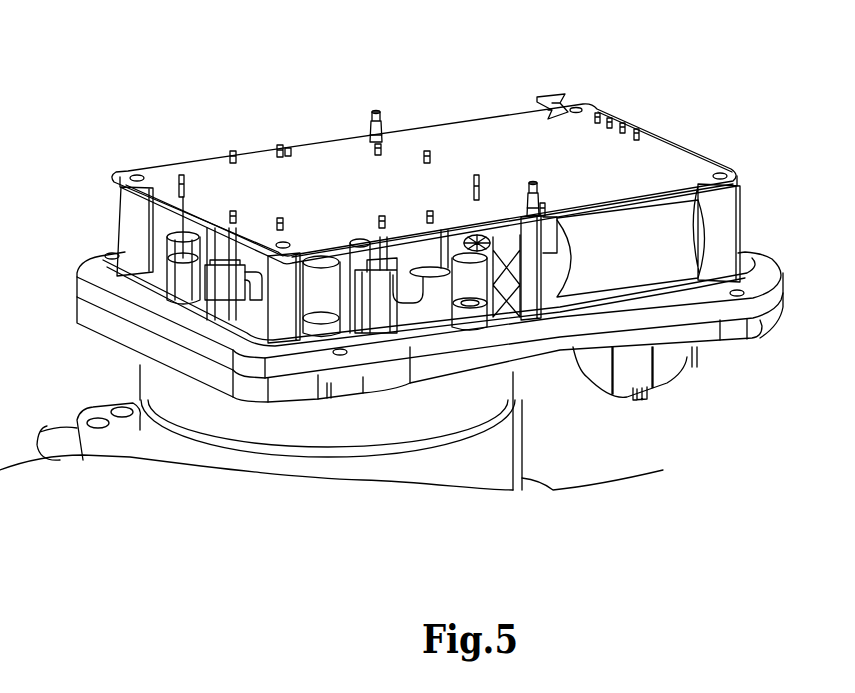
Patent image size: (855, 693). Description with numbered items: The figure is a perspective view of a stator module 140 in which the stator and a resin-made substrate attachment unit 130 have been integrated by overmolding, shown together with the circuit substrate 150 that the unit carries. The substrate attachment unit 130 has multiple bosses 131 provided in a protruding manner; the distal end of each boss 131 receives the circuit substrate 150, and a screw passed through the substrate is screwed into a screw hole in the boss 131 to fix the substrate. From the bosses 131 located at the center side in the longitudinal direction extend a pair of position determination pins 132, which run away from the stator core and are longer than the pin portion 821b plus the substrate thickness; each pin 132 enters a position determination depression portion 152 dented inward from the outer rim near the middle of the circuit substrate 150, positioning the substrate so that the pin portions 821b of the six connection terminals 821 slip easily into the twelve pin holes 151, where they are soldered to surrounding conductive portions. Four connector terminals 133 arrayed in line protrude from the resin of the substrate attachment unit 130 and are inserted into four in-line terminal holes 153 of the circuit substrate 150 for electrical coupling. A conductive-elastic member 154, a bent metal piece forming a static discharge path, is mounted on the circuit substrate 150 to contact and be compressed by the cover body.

The substrate attachment unit 130 is at (760, 250).
The boss 131 is at (132, 220).
The position determination pin 132 is at (379, 111).
The connector terminal 133 is at (611, 114).
The stator module 140 is at (137, 373).
The circuit substrate 150 is at (700, 153).
The pin hole 151 is at (289, 147).
The position determination depression portion 152 is at (386, 135).
The terminal hole 153 is at (640, 129).
The conductive-elastic member 154 is at (556, 96).
The connection terminal 821 is at (433, 262).
The pin portion 821b is at (278, 146).